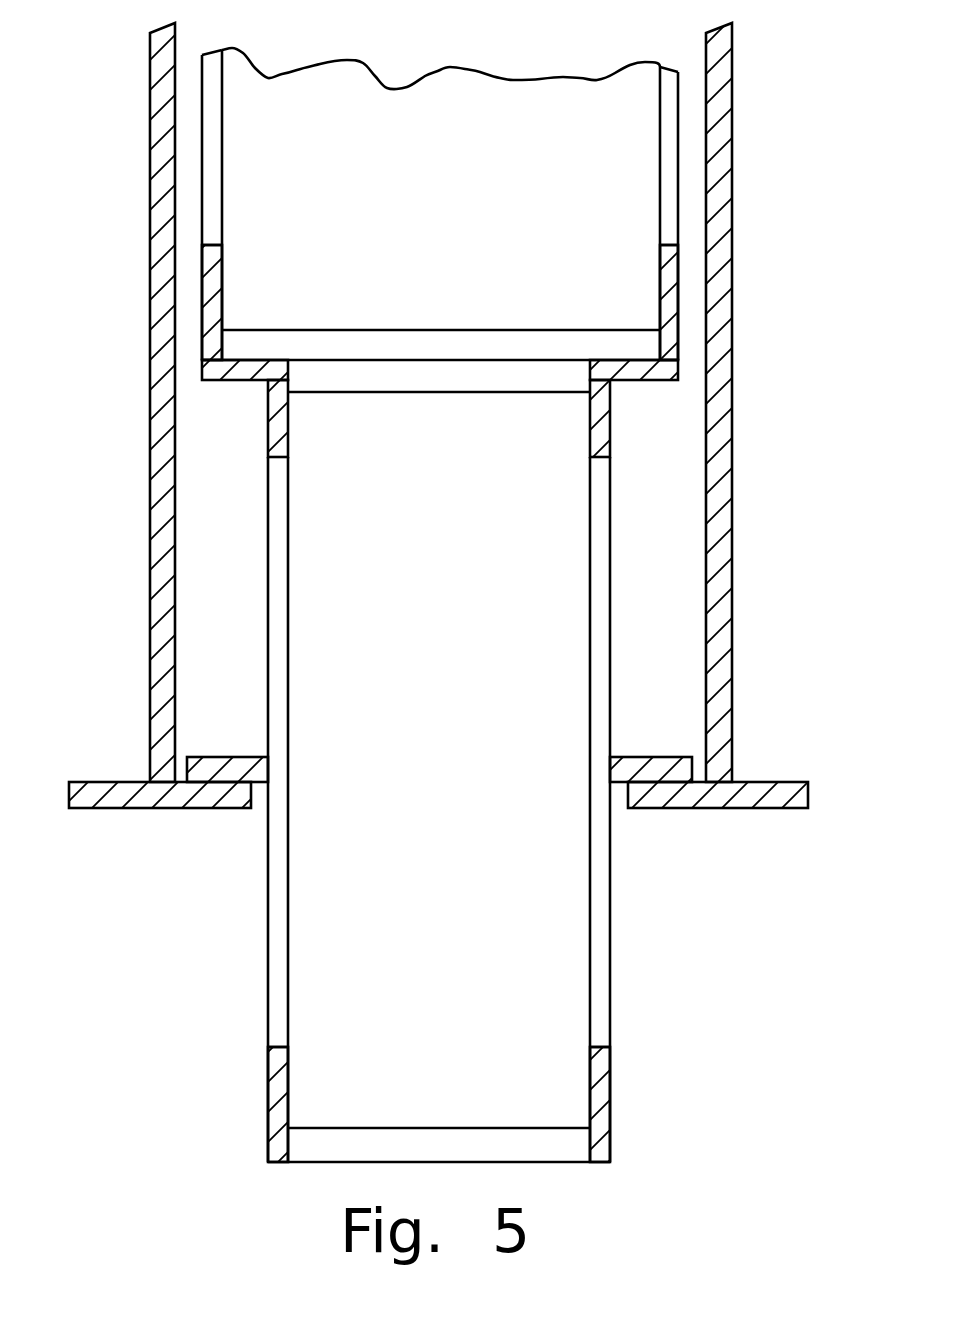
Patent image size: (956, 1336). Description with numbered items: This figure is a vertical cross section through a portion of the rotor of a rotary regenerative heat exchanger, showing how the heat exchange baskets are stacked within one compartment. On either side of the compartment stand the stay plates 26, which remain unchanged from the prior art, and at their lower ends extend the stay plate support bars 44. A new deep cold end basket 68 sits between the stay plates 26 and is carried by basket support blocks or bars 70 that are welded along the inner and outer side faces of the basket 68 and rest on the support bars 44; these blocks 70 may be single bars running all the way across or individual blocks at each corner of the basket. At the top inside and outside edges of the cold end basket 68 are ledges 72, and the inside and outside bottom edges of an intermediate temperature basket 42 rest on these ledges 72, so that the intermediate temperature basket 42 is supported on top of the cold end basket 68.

The stay plate 26 is at (150, 618).
The intermediate temperature basket 42 is at (437, 112).
The support bar 44 is at (167, 808).
The cold end basket 68 is at (564, 865).
The basket support block 70 is at (233, 755).
The ledge 72 is at (212, 386).